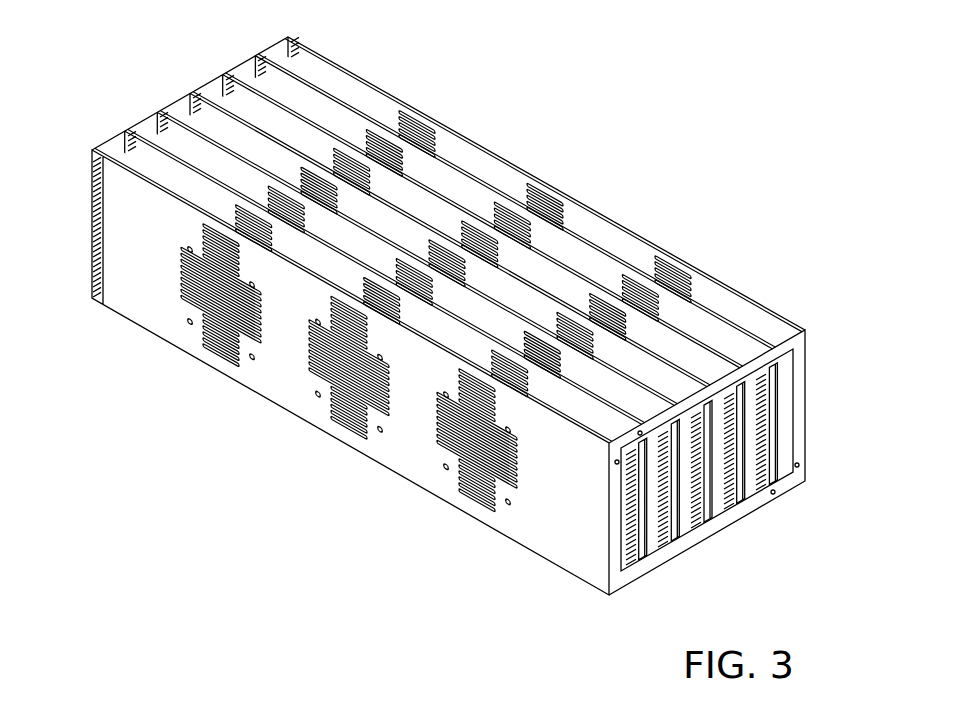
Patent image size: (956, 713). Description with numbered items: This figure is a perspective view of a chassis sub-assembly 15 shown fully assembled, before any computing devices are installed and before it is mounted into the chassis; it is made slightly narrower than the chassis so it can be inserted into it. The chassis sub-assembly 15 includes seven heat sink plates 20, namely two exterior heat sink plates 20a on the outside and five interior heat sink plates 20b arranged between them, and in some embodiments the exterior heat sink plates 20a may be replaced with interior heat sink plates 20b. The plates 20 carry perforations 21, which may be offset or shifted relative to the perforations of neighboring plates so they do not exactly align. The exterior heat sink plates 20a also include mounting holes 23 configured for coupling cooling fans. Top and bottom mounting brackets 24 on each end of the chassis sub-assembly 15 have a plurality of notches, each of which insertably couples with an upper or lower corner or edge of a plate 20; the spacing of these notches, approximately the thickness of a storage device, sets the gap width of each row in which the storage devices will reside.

The chassis sub-assembly 15 is at (459, 334).
The heat sink plates 20 is at (368, 178).
The exterior heat sink plates 20a is at (593, 228).
The interior heat sink plates 20b is at (740, 350).
The perforations 21 is at (347, 370).
The mounting holes 23 is at (185, 320).
The mounting brackets 24 is at (713, 397).